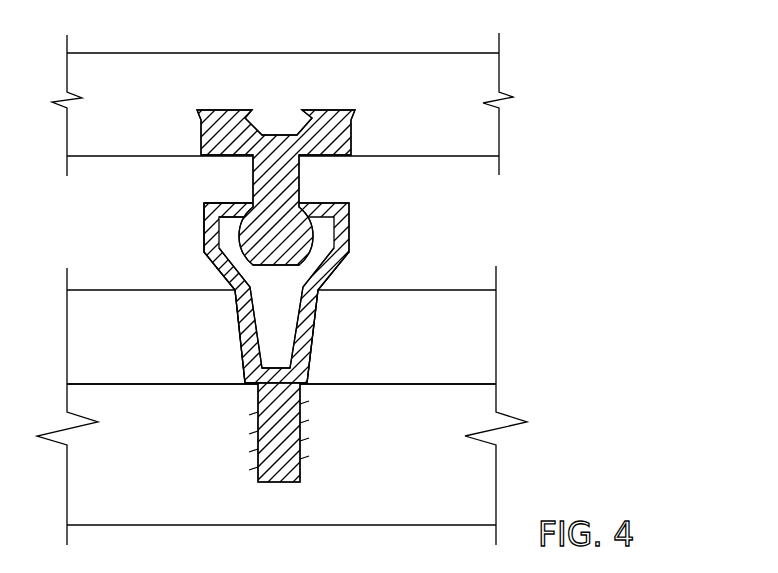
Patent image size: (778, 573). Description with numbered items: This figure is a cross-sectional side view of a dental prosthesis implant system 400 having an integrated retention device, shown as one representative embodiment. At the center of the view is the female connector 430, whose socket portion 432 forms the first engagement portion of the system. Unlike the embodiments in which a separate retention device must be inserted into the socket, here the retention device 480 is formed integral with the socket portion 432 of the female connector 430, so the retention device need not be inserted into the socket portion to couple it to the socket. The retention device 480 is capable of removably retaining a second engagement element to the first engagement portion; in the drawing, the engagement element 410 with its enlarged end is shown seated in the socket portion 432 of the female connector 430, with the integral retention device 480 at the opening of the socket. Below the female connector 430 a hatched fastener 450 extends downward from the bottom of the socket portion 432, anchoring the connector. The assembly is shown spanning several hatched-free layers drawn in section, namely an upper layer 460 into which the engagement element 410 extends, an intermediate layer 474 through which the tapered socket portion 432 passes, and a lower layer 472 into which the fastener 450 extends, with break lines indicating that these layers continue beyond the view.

The fastening assembly 400 is at (538, 55).
The insert with ball end 410 is at (236, 99).
The female connector 430 is at (364, 242).
The socket portion 432 is at (337, 279).
The threaded fastener 450 is at (318, 440).
The upper panel 460 is at (128, 44).
The lower panel 472 is at (473, 479).
The intermediate panel 474 is at (473, 343).
The retention device 480 is at (230, 203).